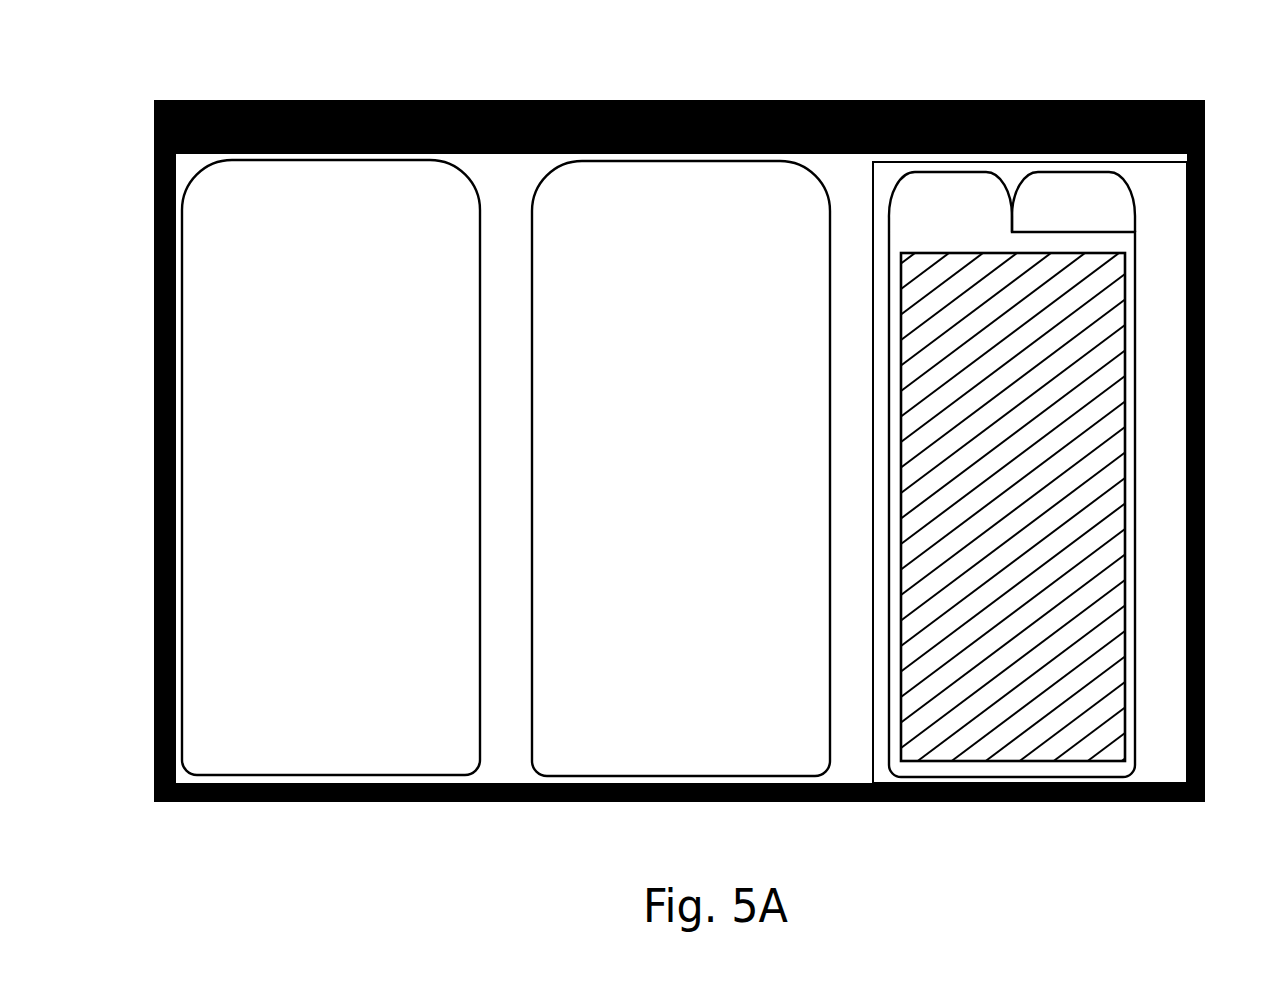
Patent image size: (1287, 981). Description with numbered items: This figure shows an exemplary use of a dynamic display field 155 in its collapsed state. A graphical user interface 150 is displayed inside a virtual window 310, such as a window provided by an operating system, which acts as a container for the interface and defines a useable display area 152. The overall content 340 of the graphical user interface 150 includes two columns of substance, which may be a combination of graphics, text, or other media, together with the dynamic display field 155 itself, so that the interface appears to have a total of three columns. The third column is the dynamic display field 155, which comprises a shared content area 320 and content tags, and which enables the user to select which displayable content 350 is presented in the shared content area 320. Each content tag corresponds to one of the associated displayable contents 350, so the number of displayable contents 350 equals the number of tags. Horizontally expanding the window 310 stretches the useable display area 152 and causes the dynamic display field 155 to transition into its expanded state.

The graphical user interface 150 is at (507, 755).
The useable display area 152 is at (1170, 207).
The dynamic display field 155 is at (1136, 467).
The virtual window 310 is at (615, 802).
The shared content area 320 is at (1126, 565).
The content 340 is at (506, 198).
The displayable content 350 is at (1100, 663).